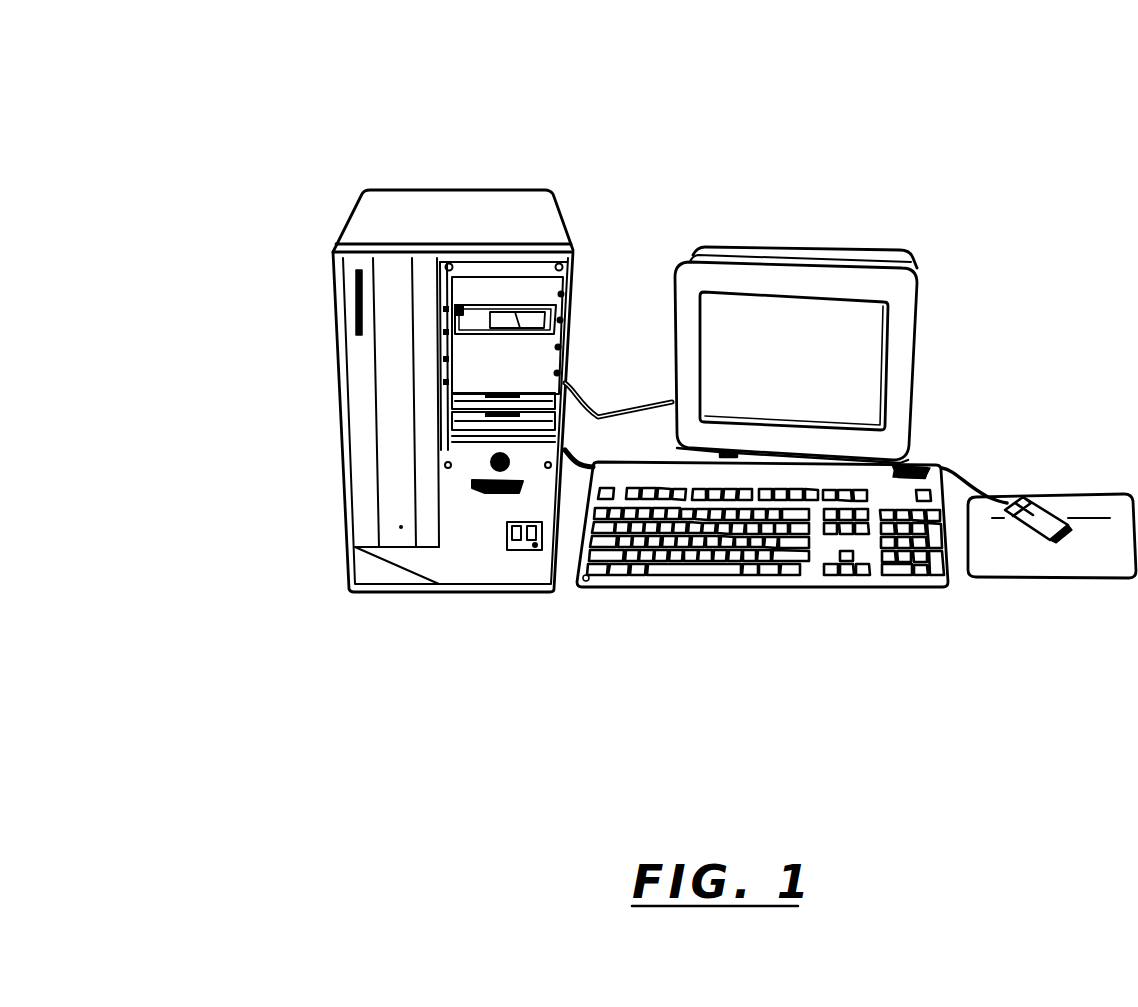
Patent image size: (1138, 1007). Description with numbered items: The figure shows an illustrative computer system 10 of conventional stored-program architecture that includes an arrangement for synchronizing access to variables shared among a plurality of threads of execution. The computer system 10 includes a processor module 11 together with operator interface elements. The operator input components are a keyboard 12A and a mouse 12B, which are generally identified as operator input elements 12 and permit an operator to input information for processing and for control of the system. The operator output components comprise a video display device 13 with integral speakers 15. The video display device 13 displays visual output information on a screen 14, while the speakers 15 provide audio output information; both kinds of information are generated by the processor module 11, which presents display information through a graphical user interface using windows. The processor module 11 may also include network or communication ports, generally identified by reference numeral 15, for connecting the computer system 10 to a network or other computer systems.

The computer system 10 is at (262, 104).
The processor module 11 is at (462, 190).
The operator input element(s) 12 is at (946, 645).
The keyboard 12A is at (810, 596).
The mouse 12B is at (1118, 586).
The video display device 13 is at (928, 360).
The screen 14 is at (717, 330).
The speakers 15 is at (342, 413).